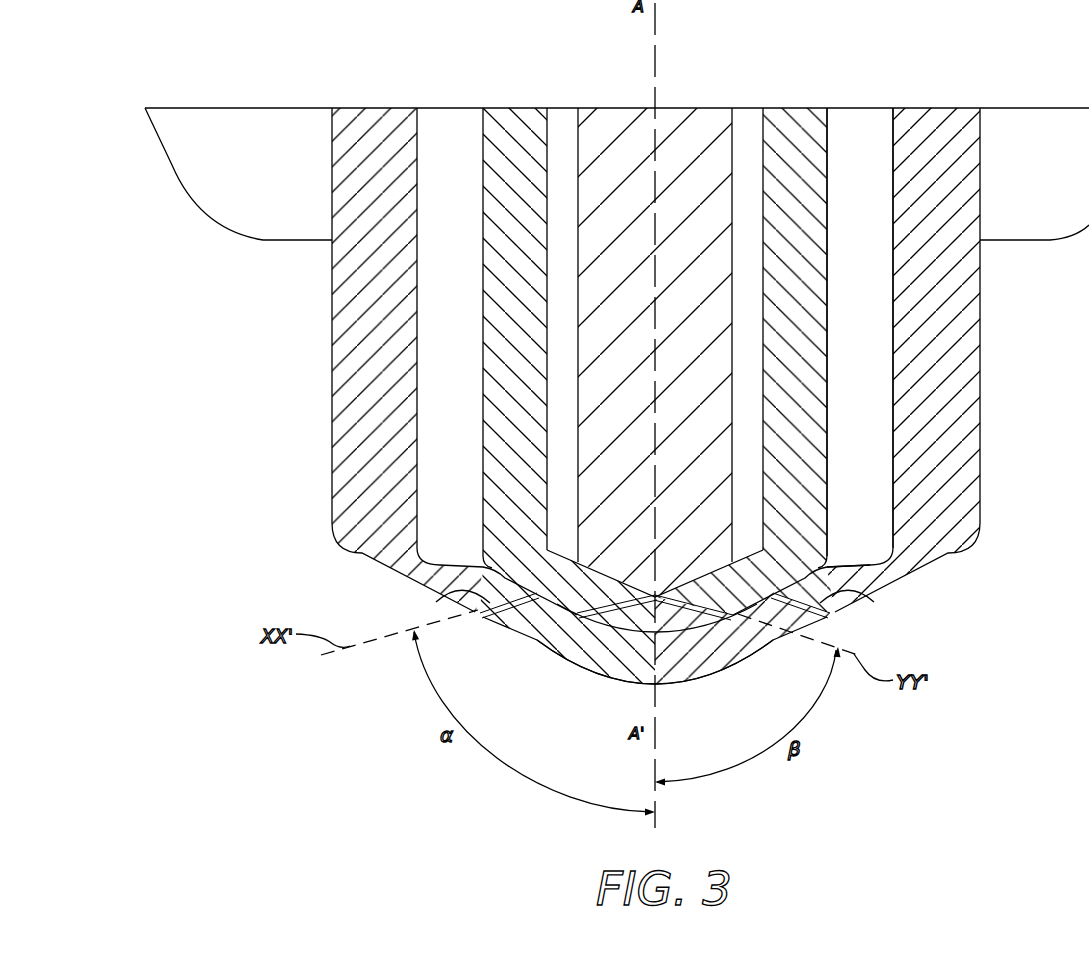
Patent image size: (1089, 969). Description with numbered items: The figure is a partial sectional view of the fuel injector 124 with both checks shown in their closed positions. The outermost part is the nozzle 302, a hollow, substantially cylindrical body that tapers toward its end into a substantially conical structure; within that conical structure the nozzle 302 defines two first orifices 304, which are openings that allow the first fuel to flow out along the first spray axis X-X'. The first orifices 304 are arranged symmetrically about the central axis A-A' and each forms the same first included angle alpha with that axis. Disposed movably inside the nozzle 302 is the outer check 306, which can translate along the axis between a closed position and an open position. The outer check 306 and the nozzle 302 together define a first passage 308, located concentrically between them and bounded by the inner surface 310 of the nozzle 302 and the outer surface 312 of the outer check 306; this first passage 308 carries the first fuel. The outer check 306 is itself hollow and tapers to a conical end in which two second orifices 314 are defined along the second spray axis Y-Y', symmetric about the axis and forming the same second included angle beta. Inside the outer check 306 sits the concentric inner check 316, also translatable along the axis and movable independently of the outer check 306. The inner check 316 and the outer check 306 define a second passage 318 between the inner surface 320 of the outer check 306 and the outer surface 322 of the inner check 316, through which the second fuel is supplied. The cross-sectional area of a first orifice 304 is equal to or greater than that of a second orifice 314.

The fuel injector 124 is at (228, 77).
The nozzle 302 is at (305, 277).
The first orifice 304 is at (448, 598).
The outer check 306 is at (838, 395).
The first passage 308 is at (867, 450).
The inner surface of the nozzle 310 is at (893, 323).
The outer surface of the outer check 312 is at (830, 300).
The second orifice 314 is at (592, 625).
The inner check 316 is at (569, 400).
The second passage 318 is at (553, 463).
The inner surface of the outer check 320 is at (547, 328).
The outer surface of the inner check 322 is at (577, 295).